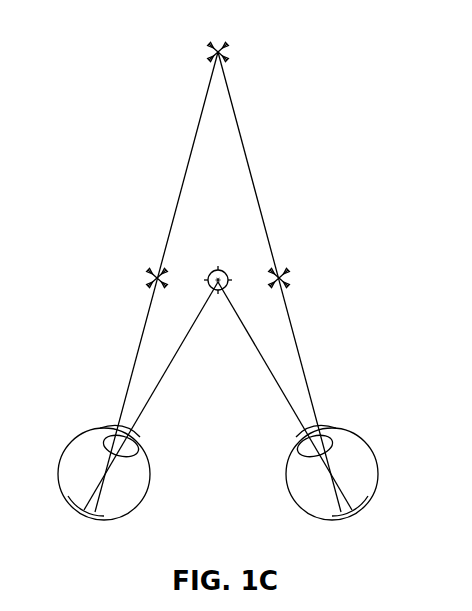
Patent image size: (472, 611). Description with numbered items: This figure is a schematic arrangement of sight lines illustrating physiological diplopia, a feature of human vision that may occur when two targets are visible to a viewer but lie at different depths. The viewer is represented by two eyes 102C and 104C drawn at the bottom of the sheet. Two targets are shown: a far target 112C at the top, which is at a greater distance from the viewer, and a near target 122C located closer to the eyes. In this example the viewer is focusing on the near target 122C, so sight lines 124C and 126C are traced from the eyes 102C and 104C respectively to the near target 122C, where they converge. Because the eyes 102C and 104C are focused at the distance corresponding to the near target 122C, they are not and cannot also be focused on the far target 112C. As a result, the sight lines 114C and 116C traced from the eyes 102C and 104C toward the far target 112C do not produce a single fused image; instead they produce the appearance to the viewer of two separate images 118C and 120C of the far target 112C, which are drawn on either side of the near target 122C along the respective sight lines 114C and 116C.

The eye 102C is at (83, 435).
The eye 104C is at (347, 432).
The far target 112C is at (227, 63).
The sight line 114C is at (137, 352).
The sight line 116C is at (299, 352).
The image of far target 118C is at (145, 268).
The image of far target 120C is at (290, 267).
The near target 122C is at (218, 284).
The sight line 124C is at (157, 385).
The sight line 126C is at (279, 385).